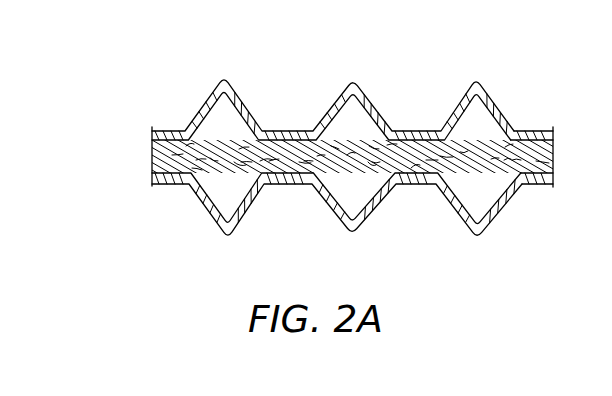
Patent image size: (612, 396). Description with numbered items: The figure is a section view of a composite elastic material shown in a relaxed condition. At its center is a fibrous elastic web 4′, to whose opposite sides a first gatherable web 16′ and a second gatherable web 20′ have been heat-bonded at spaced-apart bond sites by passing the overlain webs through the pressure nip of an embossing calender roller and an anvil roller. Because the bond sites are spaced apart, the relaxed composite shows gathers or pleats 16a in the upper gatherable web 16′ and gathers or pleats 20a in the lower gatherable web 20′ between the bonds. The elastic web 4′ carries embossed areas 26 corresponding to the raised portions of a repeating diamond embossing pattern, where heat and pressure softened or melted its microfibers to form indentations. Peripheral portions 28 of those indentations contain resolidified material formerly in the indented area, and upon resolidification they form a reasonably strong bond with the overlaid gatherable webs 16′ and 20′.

The gathers or pleats 16a is at (471, 80).
The gathers or pleats 20a is at (238, 238).
The embossed areas 26 is at (285, 150).
The peripheral portions 28 is at (446, 131).
The first gatherable web 16′ is at (530, 141).
The second gatherable web 20′ is at (536, 186).
The fibrous elastic web 4′ is at (542, 161).